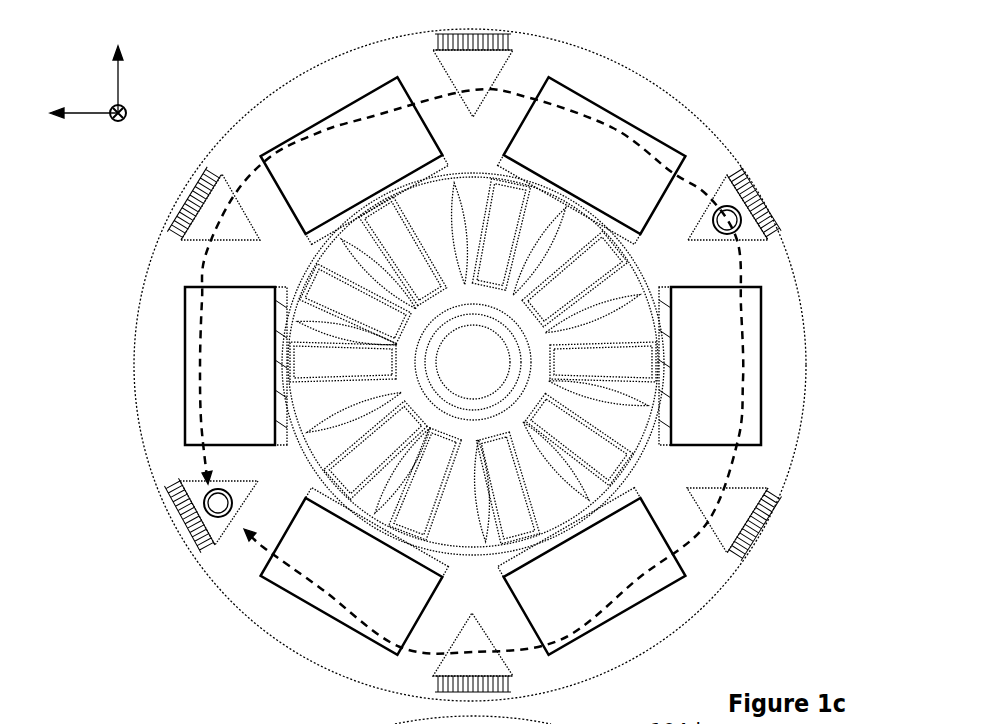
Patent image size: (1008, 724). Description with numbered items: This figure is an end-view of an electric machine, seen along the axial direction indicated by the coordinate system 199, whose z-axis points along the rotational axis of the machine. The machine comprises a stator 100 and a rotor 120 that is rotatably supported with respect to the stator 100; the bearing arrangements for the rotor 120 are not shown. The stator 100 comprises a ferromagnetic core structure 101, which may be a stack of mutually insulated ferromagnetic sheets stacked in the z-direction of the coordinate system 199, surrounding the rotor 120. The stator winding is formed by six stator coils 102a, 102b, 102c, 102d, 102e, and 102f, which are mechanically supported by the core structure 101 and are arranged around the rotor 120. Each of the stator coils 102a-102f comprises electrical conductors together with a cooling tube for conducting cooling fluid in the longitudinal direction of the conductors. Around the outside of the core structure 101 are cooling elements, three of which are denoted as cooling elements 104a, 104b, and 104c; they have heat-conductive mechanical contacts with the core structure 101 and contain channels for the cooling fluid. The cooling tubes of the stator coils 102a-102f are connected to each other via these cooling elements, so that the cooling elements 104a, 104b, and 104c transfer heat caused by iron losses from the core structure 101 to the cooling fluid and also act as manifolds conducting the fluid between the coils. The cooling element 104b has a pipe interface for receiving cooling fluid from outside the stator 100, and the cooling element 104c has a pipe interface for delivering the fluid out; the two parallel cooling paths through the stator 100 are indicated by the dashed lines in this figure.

The stator 100 is at (752, 100).
The ferromagnetic core structure 101 is at (650, 105).
The stator coil 102a is at (327, 160).
The stator coil 102b is at (208, 382).
The stator coil 102c is at (332, 585).
The stator coil 102d is at (570, 585).
The stator coil 102e is at (681, 375).
The stator coil 102f is at (570, 161).
The cooling element 104a is at (492, 68).
The cooling element 104b is at (740, 197).
The cooling element 104c is at (208, 521).
The rotor 120 is at (323, 463).
The coordinate system 199 is at (105, 91).